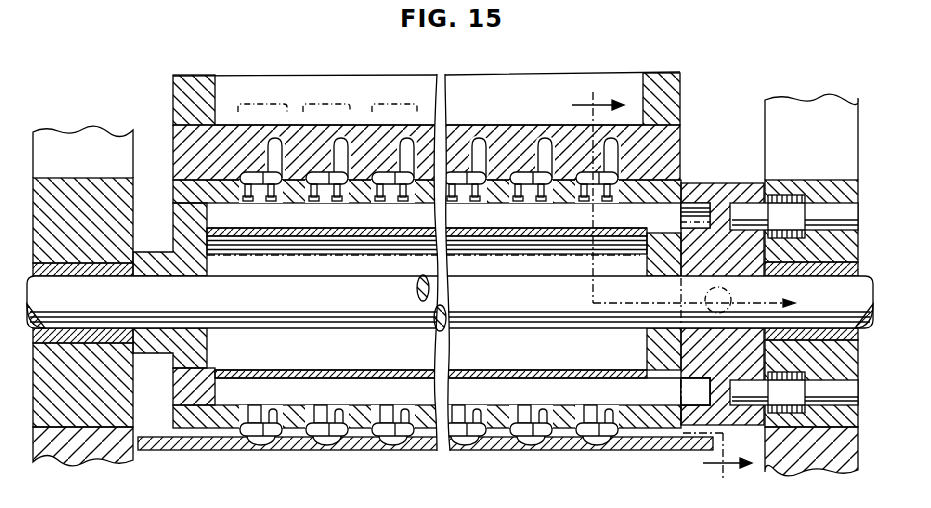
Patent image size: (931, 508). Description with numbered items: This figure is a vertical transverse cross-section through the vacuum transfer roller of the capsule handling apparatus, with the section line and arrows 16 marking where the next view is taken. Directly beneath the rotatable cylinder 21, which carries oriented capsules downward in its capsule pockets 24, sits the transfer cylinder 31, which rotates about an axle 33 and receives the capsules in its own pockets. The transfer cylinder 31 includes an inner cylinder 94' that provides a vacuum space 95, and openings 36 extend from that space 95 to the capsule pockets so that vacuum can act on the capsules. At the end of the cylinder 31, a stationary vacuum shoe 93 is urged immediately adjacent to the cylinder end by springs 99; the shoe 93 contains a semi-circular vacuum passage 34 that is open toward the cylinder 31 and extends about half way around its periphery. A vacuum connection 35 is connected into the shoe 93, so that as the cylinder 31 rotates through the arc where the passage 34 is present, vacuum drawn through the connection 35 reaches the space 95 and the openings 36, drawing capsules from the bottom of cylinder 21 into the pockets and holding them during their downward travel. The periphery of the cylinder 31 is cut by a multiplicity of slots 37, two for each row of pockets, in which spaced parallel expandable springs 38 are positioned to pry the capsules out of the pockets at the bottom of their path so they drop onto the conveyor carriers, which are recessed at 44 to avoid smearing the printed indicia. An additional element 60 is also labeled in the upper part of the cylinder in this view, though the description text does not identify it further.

The cylinder 21 is at (452, 132).
The capsule pockets 24 is at (323, 103).
The transfer cylinder 31 is at (665, 187).
The axle 33 is at (377, 301).
The vacuum passage 34 is at (702, 207).
The vacuum connection 35 is at (704, 294).
The openings 36 is at (587, 187).
The slots 37 is at (330, 187).
The expandable springs 38 is at (281, 187).
The recess 44 is at (597, 432).
The pin 60 is at (546, 160).
The vacuum shoe 93 is at (706, 375).
The inner cylinder 94' is at (431, 353).
The vacuum space 95 is at (500, 228).
The springs 99 is at (778, 195).
The section line 16 is at (663, 284).